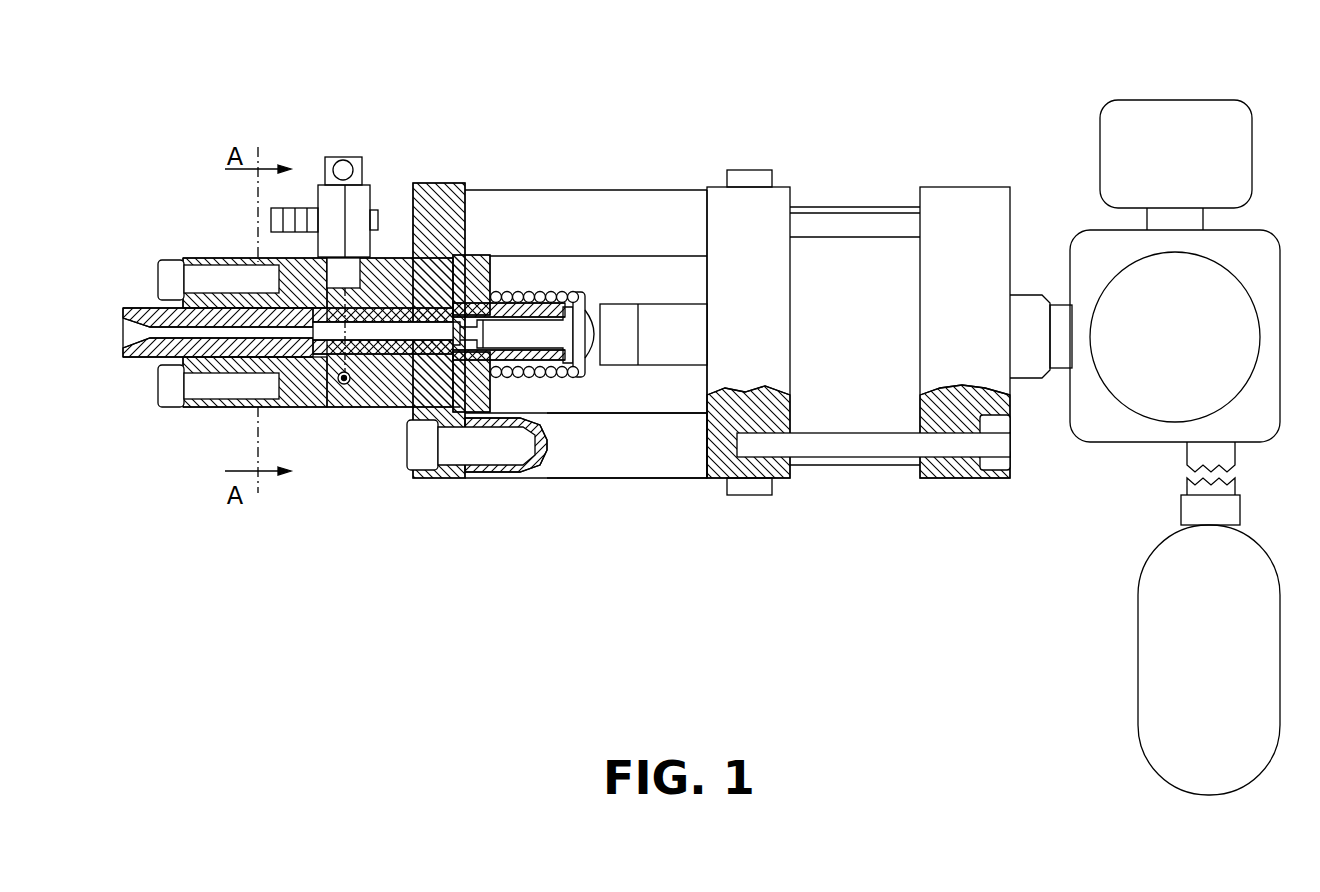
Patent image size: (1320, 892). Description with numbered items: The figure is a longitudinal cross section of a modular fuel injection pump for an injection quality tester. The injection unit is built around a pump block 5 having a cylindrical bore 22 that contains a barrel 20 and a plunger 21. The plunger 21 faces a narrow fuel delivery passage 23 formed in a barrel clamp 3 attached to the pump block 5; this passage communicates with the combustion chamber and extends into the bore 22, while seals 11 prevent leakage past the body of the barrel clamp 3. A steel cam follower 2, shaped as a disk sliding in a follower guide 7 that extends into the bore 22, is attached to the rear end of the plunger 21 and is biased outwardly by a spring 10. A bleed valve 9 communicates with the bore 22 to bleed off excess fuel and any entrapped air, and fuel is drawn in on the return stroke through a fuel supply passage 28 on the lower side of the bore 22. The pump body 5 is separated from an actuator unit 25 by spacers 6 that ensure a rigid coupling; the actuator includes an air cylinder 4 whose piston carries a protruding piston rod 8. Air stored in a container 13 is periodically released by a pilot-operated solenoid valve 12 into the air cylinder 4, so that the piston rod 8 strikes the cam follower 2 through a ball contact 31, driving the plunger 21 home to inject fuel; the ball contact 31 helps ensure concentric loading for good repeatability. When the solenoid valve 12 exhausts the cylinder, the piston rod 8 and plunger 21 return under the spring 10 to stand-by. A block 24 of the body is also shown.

The cam follower 2 is at (543, 327).
The barrel clamp 3 is at (202, 407).
The air cylinder 4 is at (858, 407).
The pump block 5 is at (325, 407).
The spacers 6 is at (618, 462).
The follower guide 7 is at (478, 257).
The piston rod 8 is at (667, 303).
The bleed valve 9 is at (331, 205).
The spring 10 is at (557, 380).
The seals 11 is at (312, 407).
The pilot-operated solenoid valve 12 is at (1155, 355).
The container 13 is at (1188, 677).
The barrel 20 is at (415, 280).
The plunger 21 is at (378, 407).
The cylindrical bore 22 is at (247, 280).
The fuel delivery passage 23 is at (212, 305).
The body block 24 is at (383, 300).
The actuator unit 25 is at (776, 217).
The fuel supply passage 28 is at (347, 407).
The ball contact 31 is at (600, 342).